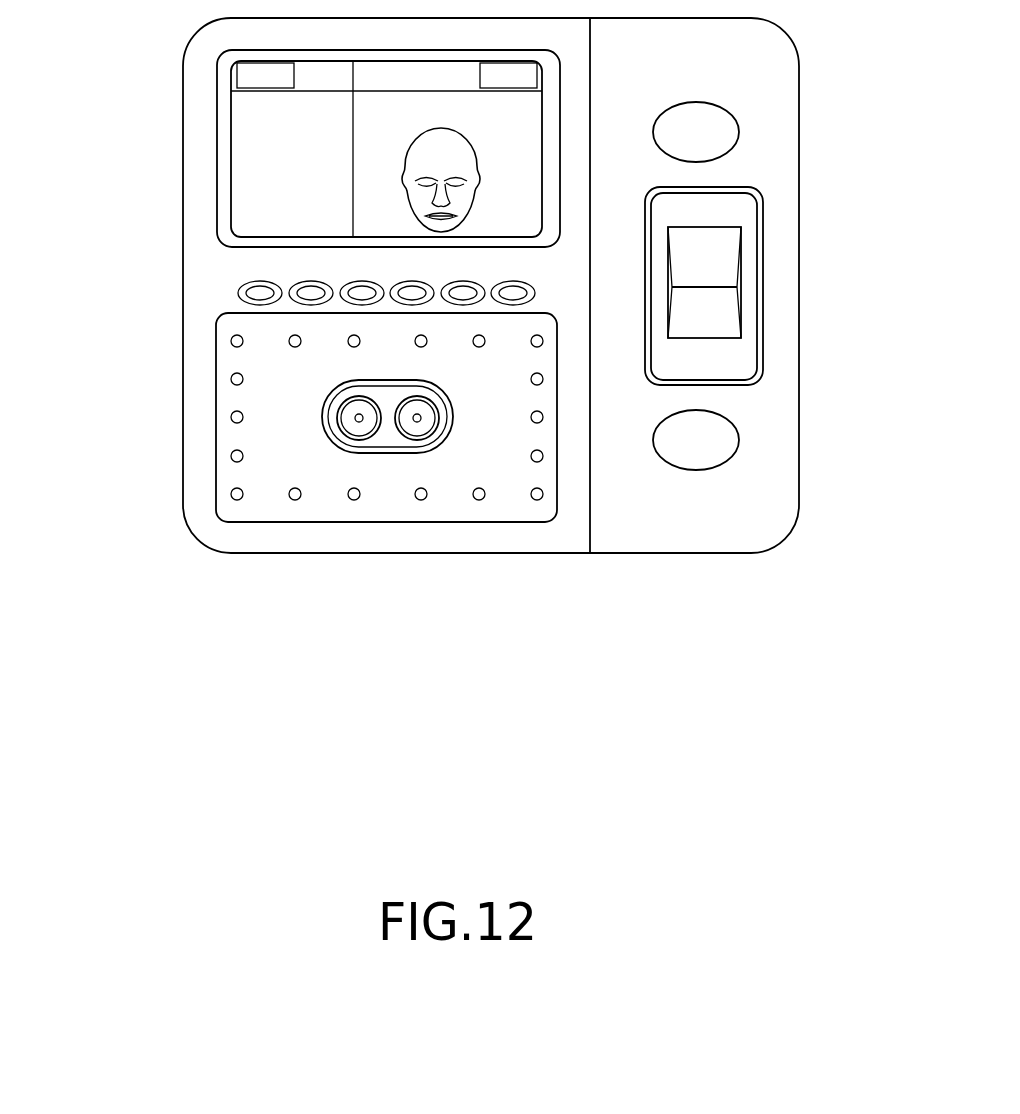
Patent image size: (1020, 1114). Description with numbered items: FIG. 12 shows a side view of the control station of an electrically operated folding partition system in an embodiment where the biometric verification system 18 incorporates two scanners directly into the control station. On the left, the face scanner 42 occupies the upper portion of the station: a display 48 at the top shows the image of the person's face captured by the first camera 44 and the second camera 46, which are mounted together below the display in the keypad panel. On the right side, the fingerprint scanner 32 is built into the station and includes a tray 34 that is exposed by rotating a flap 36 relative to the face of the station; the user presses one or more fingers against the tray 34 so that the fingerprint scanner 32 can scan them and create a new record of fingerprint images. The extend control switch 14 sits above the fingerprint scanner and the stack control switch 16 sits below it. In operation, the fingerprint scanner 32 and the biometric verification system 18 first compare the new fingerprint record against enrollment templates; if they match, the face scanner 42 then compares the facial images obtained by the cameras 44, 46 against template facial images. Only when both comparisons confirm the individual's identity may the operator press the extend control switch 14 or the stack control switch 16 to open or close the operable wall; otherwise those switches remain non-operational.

The extend control switch 14 is at (739, 132).
The stack control switch 16 is at (739, 440).
The biometric verification system 18 is at (216, 342).
The fingerprint scanner 32 is at (808, 279).
The tray 34 is at (705, 327).
The flap 36 is at (720, 212).
The face scanner 42 is at (287, 539).
The first camera 44 is at (360, 443).
The second camera 46 is at (425, 438).
The display 48 is at (230, 135).